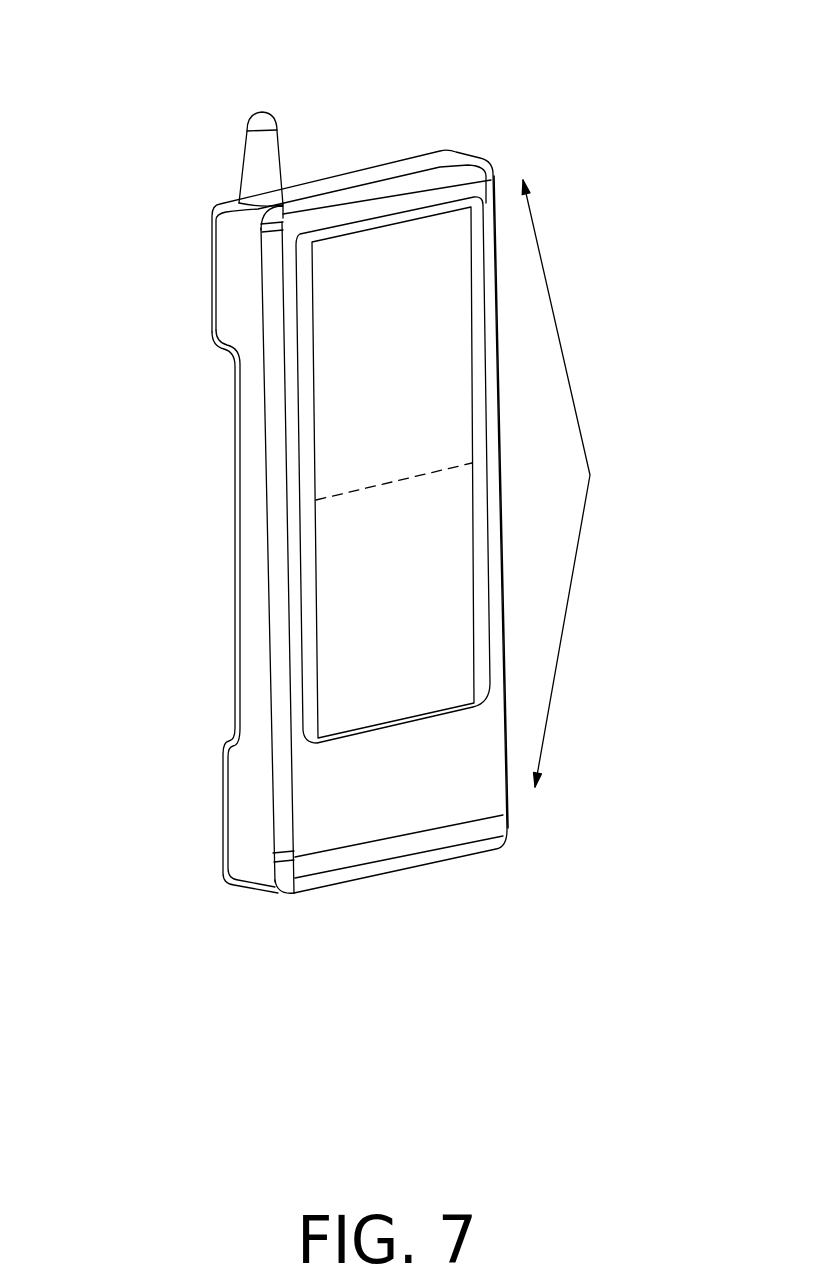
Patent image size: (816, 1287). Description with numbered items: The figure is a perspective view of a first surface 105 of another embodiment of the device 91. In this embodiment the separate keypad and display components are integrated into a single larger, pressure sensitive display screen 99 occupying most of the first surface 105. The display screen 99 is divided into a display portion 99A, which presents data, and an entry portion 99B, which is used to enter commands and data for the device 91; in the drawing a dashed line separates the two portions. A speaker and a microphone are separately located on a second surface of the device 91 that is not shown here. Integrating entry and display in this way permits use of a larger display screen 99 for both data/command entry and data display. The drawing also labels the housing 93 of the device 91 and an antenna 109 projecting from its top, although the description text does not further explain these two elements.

The device 91 is at (570, 87).
The housing 93 is at (240, 558).
The pressure sensitive display screen 99 is at (393, 404).
The display portion 99A is at (394, 416).
The entry portion 99B is at (402, 621).
The first surface 105 is at (590, 475).
The antenna 109 is at (262, 170).